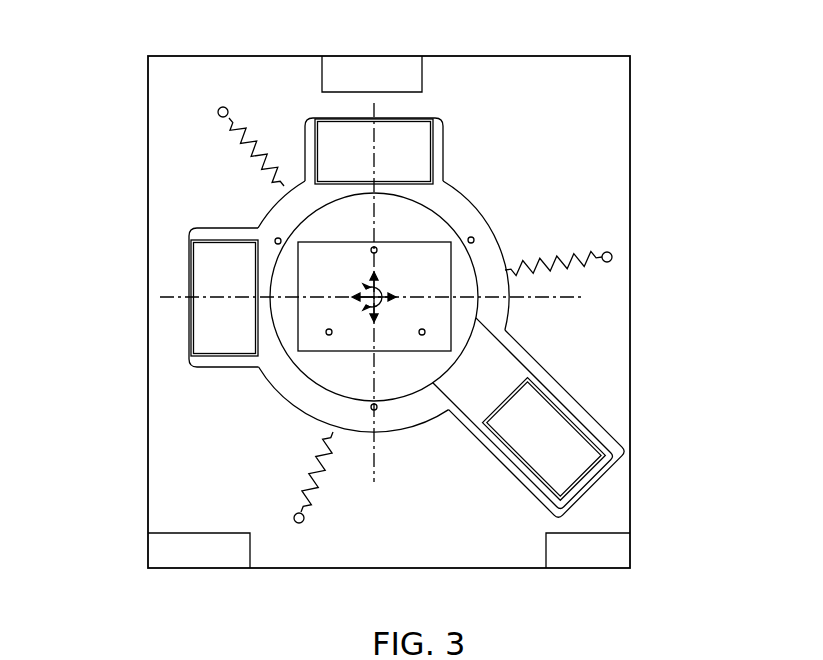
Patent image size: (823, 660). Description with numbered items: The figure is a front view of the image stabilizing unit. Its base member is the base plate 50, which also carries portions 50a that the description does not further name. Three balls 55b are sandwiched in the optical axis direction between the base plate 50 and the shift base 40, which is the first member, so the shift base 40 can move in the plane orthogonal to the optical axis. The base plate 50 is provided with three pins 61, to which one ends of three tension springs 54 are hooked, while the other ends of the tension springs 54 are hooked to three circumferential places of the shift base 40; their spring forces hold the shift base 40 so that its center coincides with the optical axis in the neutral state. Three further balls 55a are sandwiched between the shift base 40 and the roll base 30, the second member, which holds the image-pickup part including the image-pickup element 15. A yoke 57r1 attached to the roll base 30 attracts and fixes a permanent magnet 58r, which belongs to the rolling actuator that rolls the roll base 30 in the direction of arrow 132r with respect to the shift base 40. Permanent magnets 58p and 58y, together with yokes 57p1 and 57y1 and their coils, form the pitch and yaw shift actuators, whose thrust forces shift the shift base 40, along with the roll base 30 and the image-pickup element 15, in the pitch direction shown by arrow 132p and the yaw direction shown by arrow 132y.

The base plate 50 is at (165, 62).
The mounting tab 50a is at (407, 66).
The pins 61 is at (218, 110).
The tension springs 54 is at (237, 130).
The balls 55a is at (375, 247).
The balls 55b is at (276, 238).
The yoke 57p1 is at (436, 128).
The yoke 57y1 is at (190, 253).
The yoke 57r1 is at (614, 470).
The permanent magnet 58p is at (330, 128).
The permanent magnet 58y is at (205, 336).
The permanent magnet 58r is at (603, 457).
The shift base 40 is at (468, 207).
The roll base 30 is at (510, 362).
The image-pickup element 15 is at (404, 352).
The arrow 132y is at (358, 296).
The arrow 132p is at (379, 284).
The arrow 132r is at (388, 302).